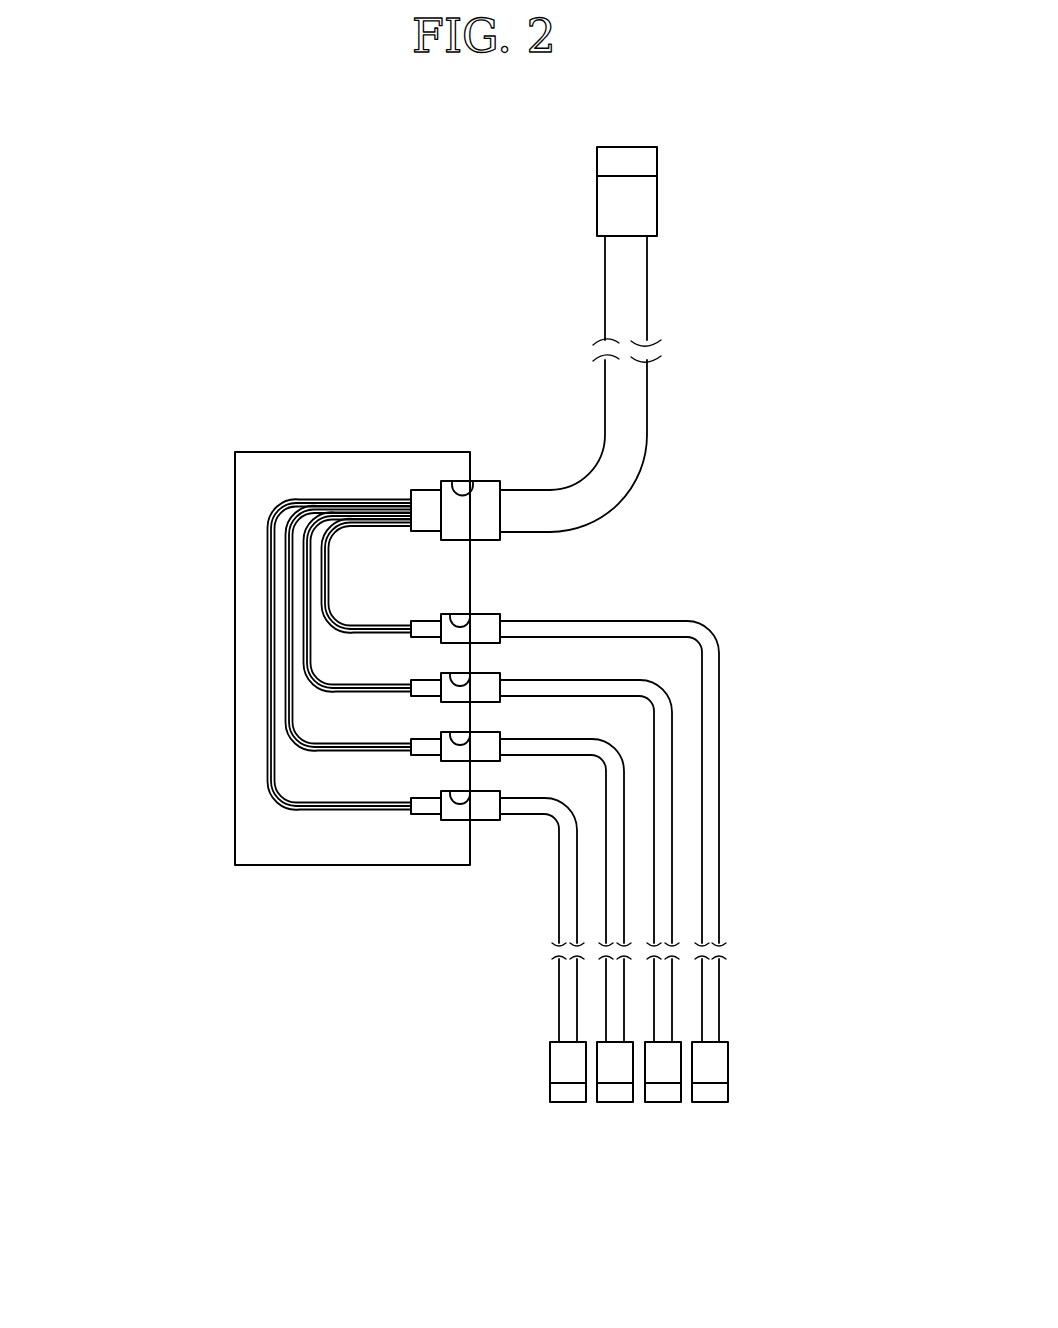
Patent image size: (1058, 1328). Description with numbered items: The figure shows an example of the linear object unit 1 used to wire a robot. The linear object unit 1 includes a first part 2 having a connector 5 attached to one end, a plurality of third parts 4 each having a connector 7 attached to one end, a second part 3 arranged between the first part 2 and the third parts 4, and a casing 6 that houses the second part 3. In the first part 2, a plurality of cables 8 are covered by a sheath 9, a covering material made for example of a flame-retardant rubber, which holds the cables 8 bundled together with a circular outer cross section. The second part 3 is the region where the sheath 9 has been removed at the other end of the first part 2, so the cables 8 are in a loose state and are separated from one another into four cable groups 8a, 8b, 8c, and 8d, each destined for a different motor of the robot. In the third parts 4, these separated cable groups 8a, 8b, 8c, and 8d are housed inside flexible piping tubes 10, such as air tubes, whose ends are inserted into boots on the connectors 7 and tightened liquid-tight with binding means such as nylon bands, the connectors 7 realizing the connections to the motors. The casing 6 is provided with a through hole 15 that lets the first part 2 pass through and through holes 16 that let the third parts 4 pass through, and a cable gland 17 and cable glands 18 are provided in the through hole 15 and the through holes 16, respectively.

The linear object unit 1 is at (163, 233).
The first part 2 is at (608, 384).
The second part 3 is at (296, 459).
The third parts 4 is at (641, 831).
The connector 5 is at (657, 198).
The casing 6 is at (211, 512).
The connectors 7 is at (728, 1060).
The cables 8 is at (278, 654).
The cable group 8a is at (299, 576).
The cable group 8b is at (300, 611).
The cable group 8c is at (283, 678).
The cable group 8d is at (265, 736).
The sheath 9 is at (636, 447).
The piping tubes 10 is at (625, 817).
The through hole 15 is at (455, 481).
The through holes 16 is at (452, 614).
The cable gland 17 is at (489, 481).
The cable glands 18 is at (485, 614).